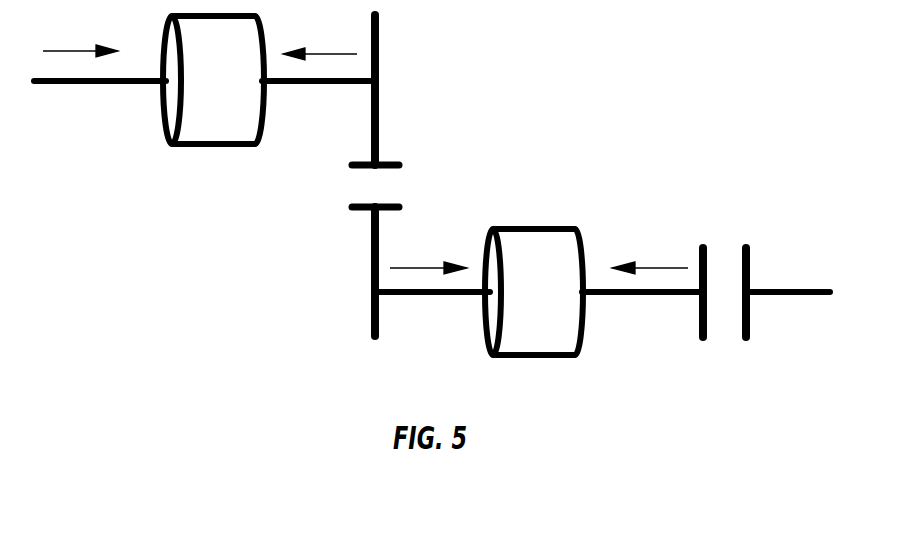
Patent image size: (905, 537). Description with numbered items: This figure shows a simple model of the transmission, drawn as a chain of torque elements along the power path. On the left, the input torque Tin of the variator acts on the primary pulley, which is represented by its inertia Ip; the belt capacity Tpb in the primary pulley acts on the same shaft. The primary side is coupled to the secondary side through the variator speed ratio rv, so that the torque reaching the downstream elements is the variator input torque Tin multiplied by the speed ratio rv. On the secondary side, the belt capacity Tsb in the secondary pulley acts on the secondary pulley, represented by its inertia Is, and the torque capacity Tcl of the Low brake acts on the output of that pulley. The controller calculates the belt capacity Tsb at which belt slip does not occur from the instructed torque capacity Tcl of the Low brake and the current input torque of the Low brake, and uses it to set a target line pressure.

The input torque of the variator Tin is at (80, 36).
The inertia of the primary pulley Ip is at (213, 80).
The belt capacity in the primary pulley Tpb is at (321, 35).
The speed ratio of the variator rv is at (353, 175).
The belt capacity in the secondary pulley Tsb is at (428, 251).
The inertia of the secondary pulley Is is at (534, 292).
The torque capacity of the Low brake Tcl is at (679, 283).